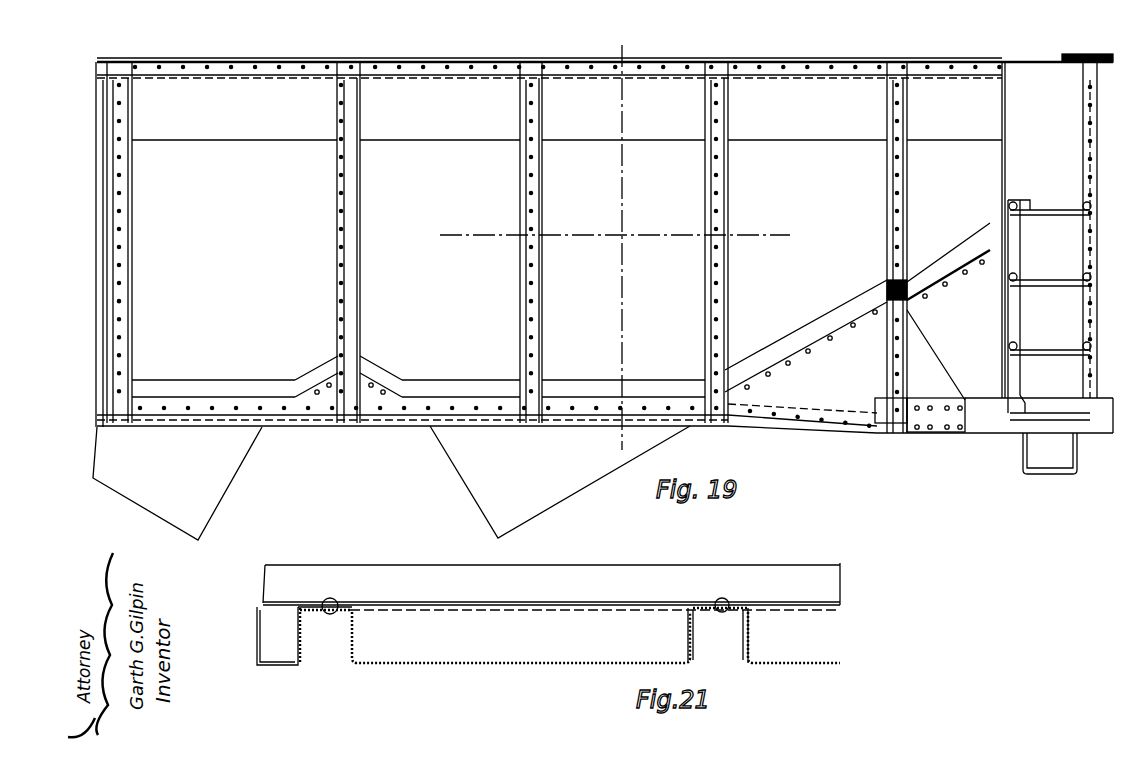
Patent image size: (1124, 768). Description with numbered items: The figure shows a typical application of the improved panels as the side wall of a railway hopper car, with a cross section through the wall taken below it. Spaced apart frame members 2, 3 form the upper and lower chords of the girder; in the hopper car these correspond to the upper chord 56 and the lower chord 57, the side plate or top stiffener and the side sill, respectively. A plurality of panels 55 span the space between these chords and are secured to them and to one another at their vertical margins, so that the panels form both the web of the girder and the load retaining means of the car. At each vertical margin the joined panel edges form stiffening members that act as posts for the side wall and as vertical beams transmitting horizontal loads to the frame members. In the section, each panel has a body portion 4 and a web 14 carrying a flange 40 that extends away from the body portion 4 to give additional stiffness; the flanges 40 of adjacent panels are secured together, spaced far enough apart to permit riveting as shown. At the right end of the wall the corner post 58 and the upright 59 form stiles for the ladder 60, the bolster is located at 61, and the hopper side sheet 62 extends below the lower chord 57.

In FIG. 19, the upper frame member 2 is at (629, 244).
In FIG. 19, the lower frame member 3 is at (607, 235).
In FIG. 21, the body portion of the plate 4 is at (272, 665).
In FIG. 21, the web 14 is at (305, 647).
In FIG. 21, the flange 40 is at (318, 615).
In FIG. 19, the panels 55 is at (567, 268).
In FIG. 21, the panels 55 is at (507, 608).
In FIG. 19, the upper chord 56 is at (252, 61).
In FIG. 19, the lower chord 57 is at (345, 427).
In FIG. 21, the lower chord 57 is at (570, 575).
In FIG. 19, the corner post 58 is at (1088, 377).
In FIG. 19, the upright 59 is at (1013, 377).
In FIG. 19, the ladder 60 is at (1047, 288).
In FIG. 19, the bolster 61 is at (895, 433).
In FIG. 19, the hopper side sheet 62 is at (391, 483).